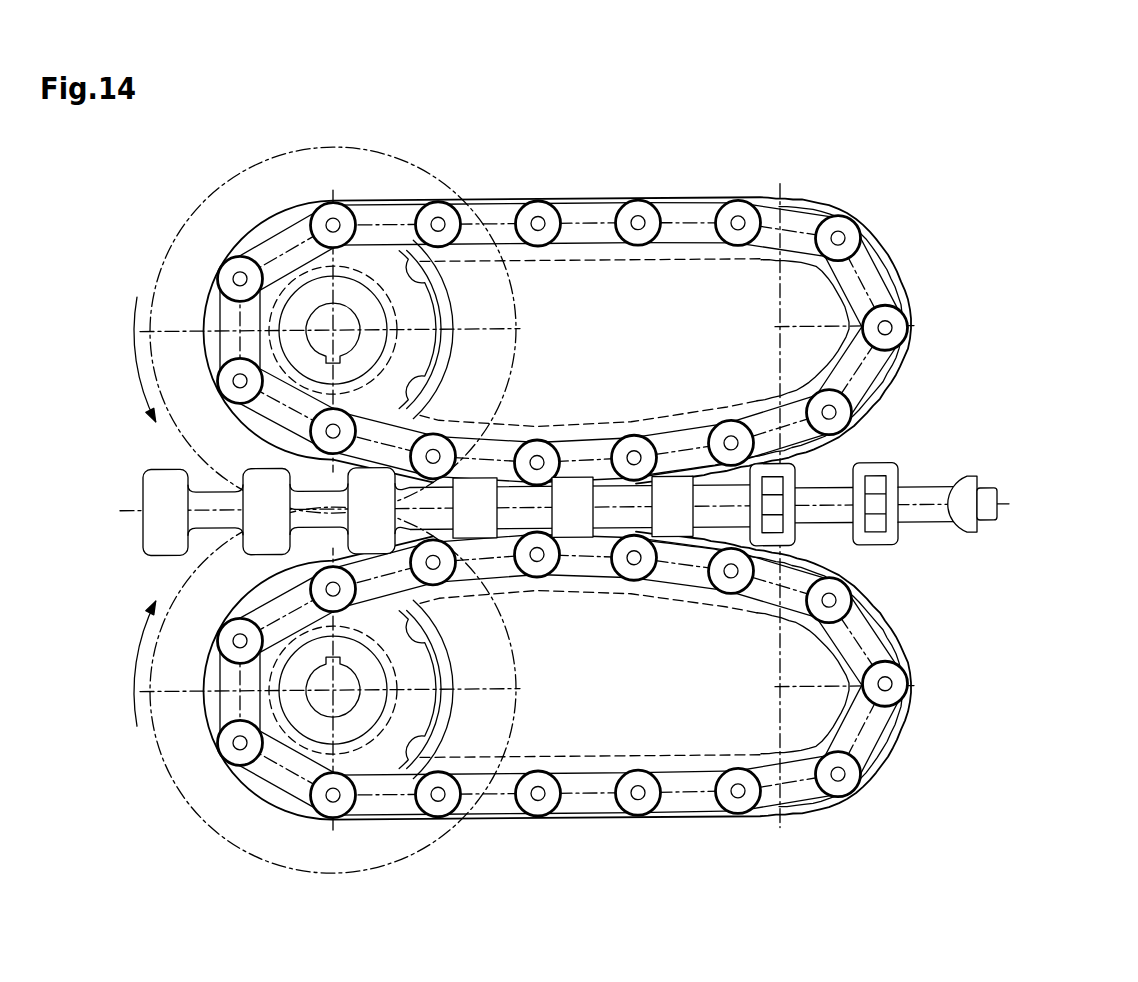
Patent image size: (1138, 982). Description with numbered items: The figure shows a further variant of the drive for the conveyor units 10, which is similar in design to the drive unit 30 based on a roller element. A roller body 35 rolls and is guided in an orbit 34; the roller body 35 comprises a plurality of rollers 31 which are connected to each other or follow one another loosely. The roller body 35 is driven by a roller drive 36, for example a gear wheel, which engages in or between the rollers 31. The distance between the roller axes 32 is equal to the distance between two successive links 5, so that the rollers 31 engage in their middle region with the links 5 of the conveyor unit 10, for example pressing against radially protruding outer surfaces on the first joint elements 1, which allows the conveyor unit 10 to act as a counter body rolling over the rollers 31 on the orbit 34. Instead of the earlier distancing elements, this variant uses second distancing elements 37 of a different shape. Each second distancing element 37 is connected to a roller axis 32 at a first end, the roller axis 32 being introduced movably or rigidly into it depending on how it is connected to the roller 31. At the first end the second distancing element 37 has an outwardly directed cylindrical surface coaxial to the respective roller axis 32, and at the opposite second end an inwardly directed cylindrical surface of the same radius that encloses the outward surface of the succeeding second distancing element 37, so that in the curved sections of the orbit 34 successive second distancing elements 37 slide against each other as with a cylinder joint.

The first joint element 1 is at (610, 467).
The link 5 is at (838, 470).
The conveyor unit 10 is at (1022, 441).
The drive unit 30 is at (625, 307).
The roller 31 is at (563, 294).
The roller axis 32 is at (642, 219).
The orbit 34 is at (830, 200).
The roller body 35 is at (843, 204).
The roller drive 36 is at (418, 312).
The second distancing element 37 is at (592, 212).